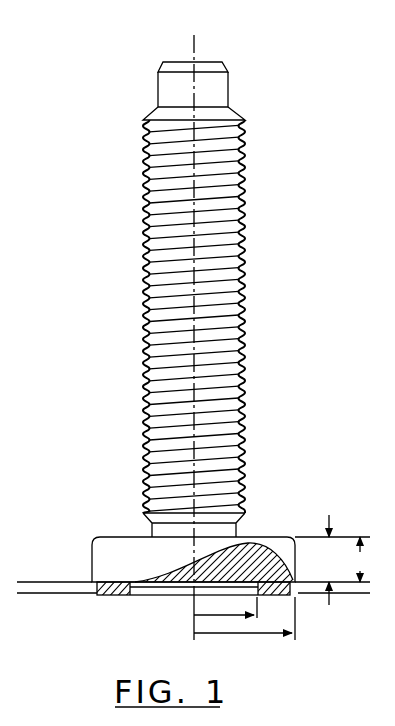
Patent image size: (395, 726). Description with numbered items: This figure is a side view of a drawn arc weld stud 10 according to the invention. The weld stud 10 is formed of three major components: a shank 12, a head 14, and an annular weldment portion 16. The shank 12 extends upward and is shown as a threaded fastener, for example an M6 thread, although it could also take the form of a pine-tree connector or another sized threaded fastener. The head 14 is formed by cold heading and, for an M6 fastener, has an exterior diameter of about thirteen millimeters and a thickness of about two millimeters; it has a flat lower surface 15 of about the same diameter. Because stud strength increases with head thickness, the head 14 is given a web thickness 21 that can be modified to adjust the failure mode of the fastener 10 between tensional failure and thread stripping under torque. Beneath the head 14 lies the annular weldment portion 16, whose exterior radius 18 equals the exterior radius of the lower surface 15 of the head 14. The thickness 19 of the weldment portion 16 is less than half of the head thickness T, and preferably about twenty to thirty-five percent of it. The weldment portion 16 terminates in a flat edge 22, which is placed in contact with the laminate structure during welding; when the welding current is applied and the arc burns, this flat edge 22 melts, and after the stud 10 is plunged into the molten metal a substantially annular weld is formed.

The drawn arc weld stud 10 is at (141, 299).
The shank 12 is at (143, 218).
The head 14 is at (231, 543).
The flat lower surface 15 is at (150, 587).
The annular weldment portion 16 is at (224, 617).
The exterior radius 18 is at (266, 635).
The thickness of the weldment portion 19 is at (28, 581).
The web thickness 21 is at (332, 560).
The flat edge 22 is at (285, 597).